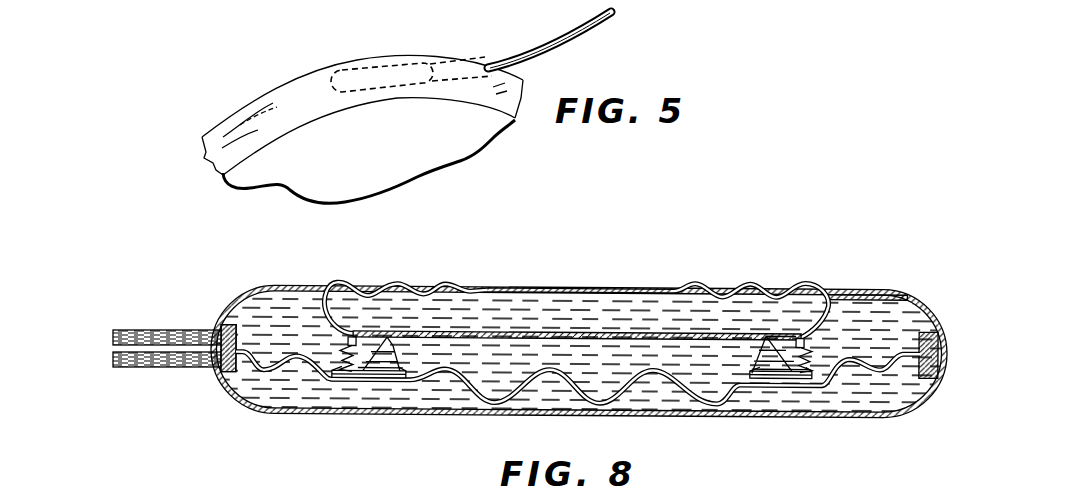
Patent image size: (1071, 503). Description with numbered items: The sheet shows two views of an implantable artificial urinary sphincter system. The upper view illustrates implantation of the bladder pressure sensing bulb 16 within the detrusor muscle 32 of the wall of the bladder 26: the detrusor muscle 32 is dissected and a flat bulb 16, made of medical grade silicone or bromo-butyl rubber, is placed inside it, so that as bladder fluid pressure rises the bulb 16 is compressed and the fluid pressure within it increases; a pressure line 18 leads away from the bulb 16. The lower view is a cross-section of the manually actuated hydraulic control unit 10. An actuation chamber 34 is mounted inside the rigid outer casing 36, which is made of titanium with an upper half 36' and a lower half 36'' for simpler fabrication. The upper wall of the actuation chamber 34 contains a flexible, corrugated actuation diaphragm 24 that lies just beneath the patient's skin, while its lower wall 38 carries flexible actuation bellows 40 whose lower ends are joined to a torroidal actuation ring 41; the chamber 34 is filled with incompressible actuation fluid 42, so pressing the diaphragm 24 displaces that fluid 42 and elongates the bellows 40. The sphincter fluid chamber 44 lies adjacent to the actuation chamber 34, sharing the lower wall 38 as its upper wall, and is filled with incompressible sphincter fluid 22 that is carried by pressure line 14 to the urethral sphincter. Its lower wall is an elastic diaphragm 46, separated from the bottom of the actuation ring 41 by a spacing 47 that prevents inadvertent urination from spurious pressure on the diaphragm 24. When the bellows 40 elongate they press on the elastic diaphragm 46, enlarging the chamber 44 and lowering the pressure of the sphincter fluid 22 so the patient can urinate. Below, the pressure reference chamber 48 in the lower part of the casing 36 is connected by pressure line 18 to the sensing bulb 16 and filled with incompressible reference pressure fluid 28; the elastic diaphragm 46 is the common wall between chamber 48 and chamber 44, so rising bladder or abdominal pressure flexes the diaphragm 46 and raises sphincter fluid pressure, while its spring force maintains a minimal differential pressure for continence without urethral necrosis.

In FIG. 8, the hydraulic control unit 10 is at (792, 241).
In FIG. 8, the pressure line 14 is at (172, 332).
In FIG. 5, the bladder pressure sensing bulb 16 is at (379, 90).
In FIG. 8, the bladder pressure sensing bulb 16 is at (111, 377).
In FIG. 5, the pressure line 18 is at (578, 41).
In FIG. 8, the pressure line 18 is at (183, 367).
In FIG. 8, the sphincter fluid 22 is at (889, 300).
In FIG. 8, the flexible actuation diaphragm 24 is at (467, 284).
In FIG. 5, the bladder 26 is at (484, 170).
In FIG. 8, the reference pressure fluid 28 is at (423, 401).
In FIG. 5, the detrusor muscle 32 is at (270, 88).
In FIG. 8, the actuation chamber 34 is at (600, 316).
In FIG. 8, the outer casing 36 is at (579, 391).
In FIG. 8, the upper half of outer casing 36' is at (867, 274).
In FIG. 8, the lower half of outer casing 36'' is at (540, 433).
In FIG. 8, the actuation chamber lower wall 38 is at (623, 339).
In FIG. 8, the actuation bellows 40 is at (402, 352).
In FIG. 8, the torroidal actuation ring 41 is at (331, 381).
In FIG. 8, the actuation fluid 42 is at (358, 306).
In FIG. 8, the sphincter fluid chamber 44 is at (288, 310).
In FIG. 8, the elastic diaphragm 46 is at (283, 363).
In FIG. 8, the spacing 47 is at (370, 377).
In FIG. 8, the pressure reference chamber 48 is at (657, 398).